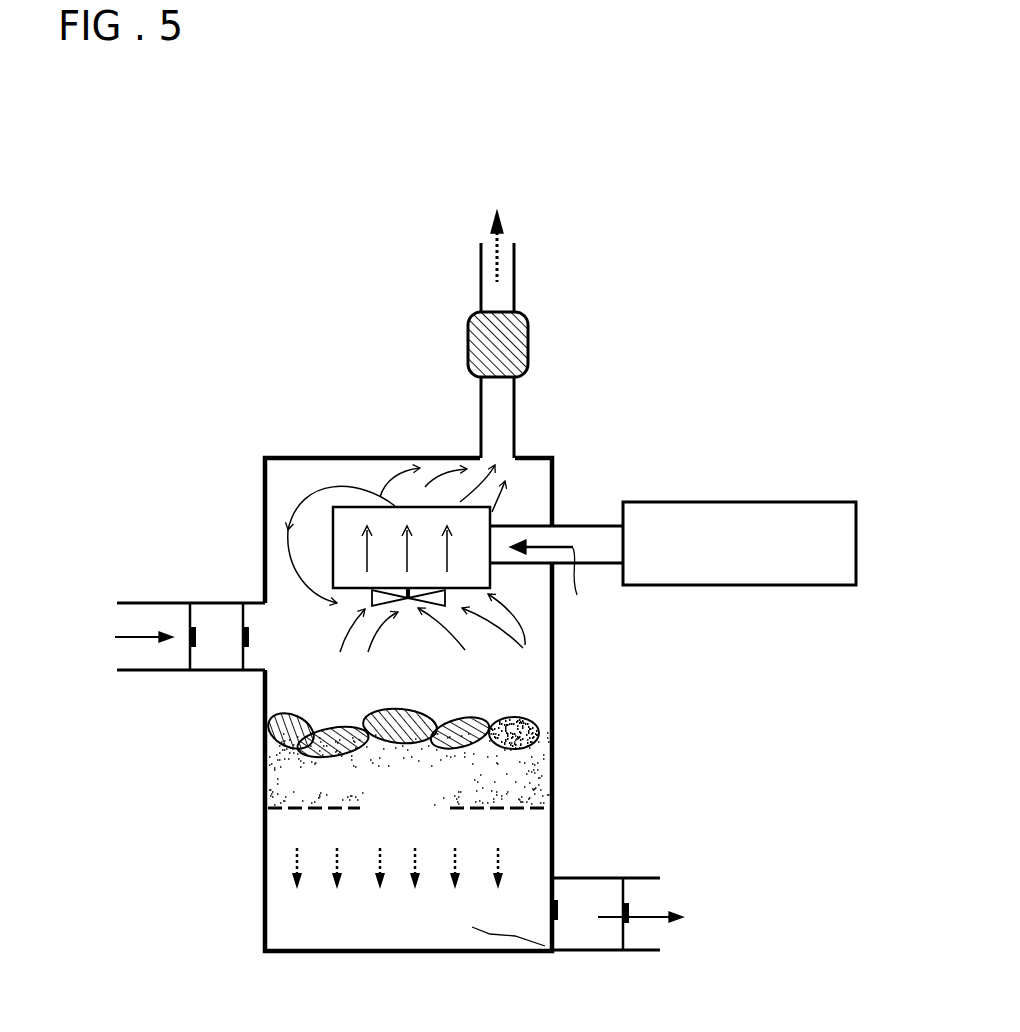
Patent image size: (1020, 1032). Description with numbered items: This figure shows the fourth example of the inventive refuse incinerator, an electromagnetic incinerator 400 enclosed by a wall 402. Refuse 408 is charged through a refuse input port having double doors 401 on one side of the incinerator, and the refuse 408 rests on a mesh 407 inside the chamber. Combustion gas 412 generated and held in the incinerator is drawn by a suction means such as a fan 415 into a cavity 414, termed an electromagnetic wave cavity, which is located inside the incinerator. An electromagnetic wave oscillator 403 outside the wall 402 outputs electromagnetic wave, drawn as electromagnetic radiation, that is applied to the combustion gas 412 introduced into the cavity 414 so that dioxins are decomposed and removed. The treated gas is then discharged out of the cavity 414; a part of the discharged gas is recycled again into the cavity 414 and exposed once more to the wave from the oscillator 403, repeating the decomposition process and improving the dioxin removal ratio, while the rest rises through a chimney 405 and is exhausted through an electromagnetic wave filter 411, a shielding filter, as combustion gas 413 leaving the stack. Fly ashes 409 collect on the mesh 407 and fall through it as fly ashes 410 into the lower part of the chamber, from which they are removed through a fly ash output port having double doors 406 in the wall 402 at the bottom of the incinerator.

The electromagnetic incinerator 400 is at (71, 270).
The refuse input port having double doors 401 is at (138, 590).
The wall 402 is at (553, 680).
The electromagnetic wave oscillator 403 is at (670, 501).
The chimney 405 is at (478, 422).
The fly ash output port having double doors 406 is at (585, 946).
The mesh 407 is at (553, 805).
The refuse 408 is at (505, 683).
The fly ashes 409 is at (409, 769).
The fly ashes 410 is at (410, 899).
The electromagnetic wave filter 411 is at (529, 323).
The combustion gas 412 is at (399, 637).
The combustion gas 413 is at (505, 226).
The cavity 414 is at (385, 508).
The fan 415 is at (368, 607).